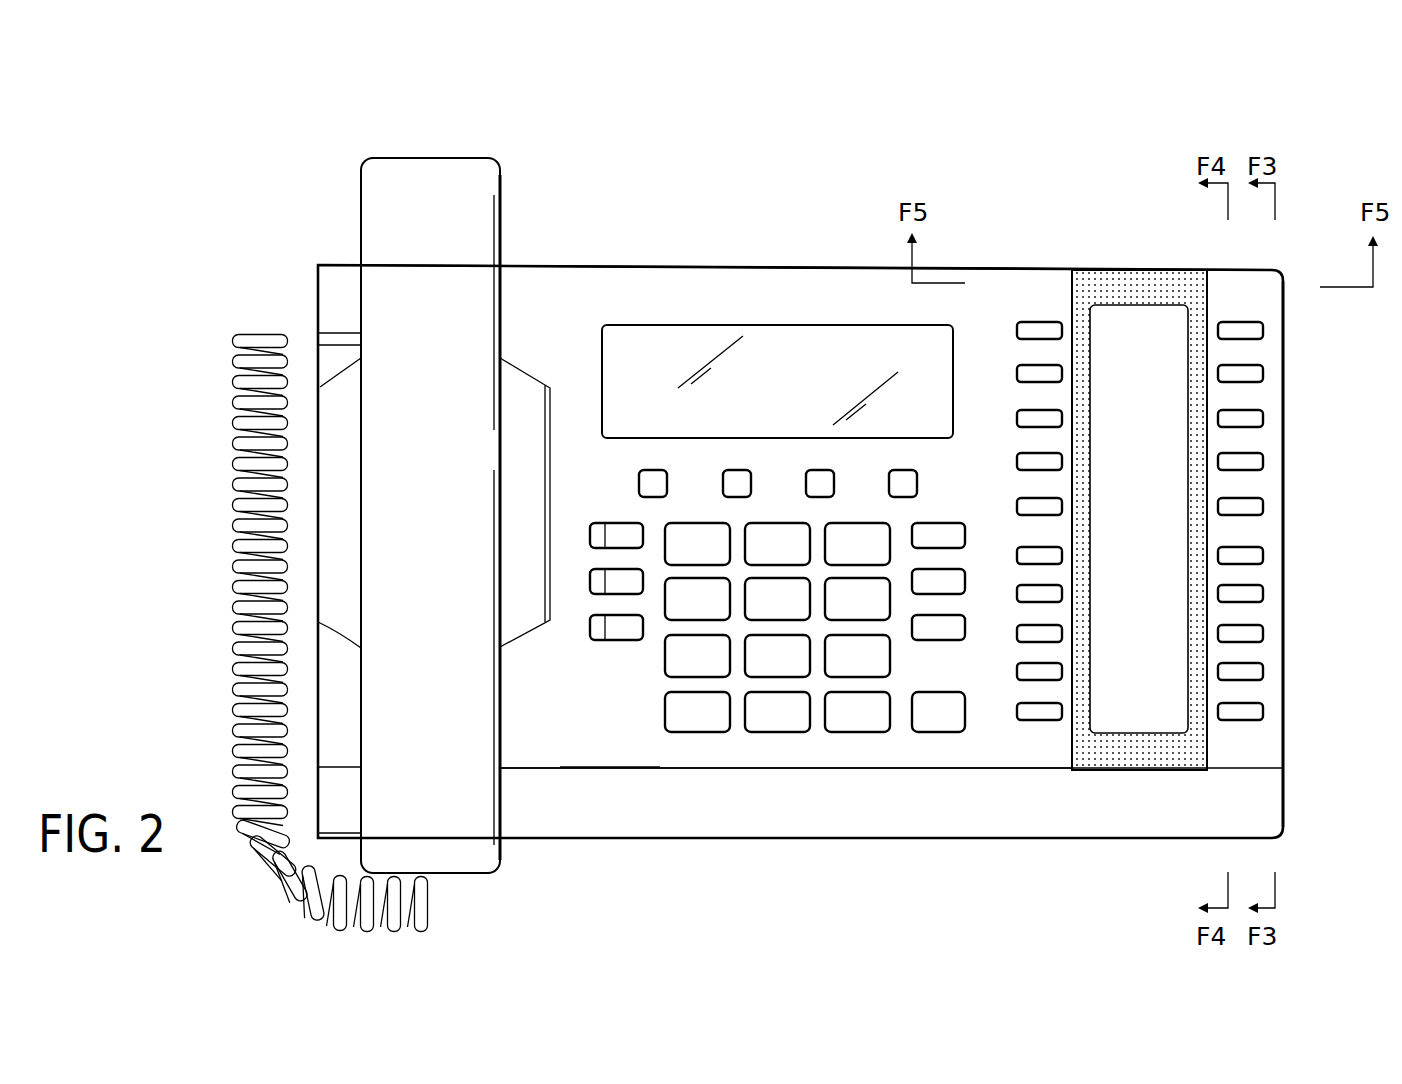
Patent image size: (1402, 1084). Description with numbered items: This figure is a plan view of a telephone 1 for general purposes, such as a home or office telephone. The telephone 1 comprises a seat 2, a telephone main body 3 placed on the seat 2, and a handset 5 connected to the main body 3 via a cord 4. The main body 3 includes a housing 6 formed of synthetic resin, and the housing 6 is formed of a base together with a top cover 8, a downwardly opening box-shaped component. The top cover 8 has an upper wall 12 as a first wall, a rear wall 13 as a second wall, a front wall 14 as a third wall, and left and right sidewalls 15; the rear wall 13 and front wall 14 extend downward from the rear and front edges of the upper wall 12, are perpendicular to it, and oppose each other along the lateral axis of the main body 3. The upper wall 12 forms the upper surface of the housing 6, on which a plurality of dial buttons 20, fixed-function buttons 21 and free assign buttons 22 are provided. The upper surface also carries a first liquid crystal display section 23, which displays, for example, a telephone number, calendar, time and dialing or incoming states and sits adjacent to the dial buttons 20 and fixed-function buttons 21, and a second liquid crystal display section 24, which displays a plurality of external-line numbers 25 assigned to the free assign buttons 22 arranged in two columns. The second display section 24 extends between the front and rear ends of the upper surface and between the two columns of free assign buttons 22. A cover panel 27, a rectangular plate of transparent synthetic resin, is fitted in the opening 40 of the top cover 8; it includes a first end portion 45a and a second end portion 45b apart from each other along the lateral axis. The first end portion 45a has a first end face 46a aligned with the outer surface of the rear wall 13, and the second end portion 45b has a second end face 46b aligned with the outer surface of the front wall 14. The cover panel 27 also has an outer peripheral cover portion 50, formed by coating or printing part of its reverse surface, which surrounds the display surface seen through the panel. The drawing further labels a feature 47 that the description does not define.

The telephone 1 is at (568, 140).
The seat 2 is at (793, 828).
The telephone main body 3 is at (677, 250).
The cord 4 is at (240, 740).
The handset 5 is at (362, 190).
The housing 6 is at (935, 762).
The top cover 8 is at (820, 266).
The upper wall 12 is at (603, 730).
The rear wall 13 is at (1001, 268).
The front wall 14 is at (1015, 770).
The sidewalls 15 is at (318, 690).
The dial buttons 20 is at (790, 715).
The fixed-function buttons 21 is at (583, 585).
The free assign buttons 22 is at (1027, 462).
The first liquid crystal display section 23 is at (762, 352).
The second liquid crystal display section 24 is at (1175, 604).
The external-line numbers 25 is at (1182, 412).
The cover panel 27 is at (1175, 478).
The opening 40 is at (1085, 742).
The first end portion 45a is at (1138, 283).
The second end portion 45b is at (1148, 760).
The first end face 46a is at (1170, 270).
The second end face 46b is at (1195, 772).
The intercom label 47 is at (1170, 685).
The outer peripheral cover portion 50 is at (1100, 286).